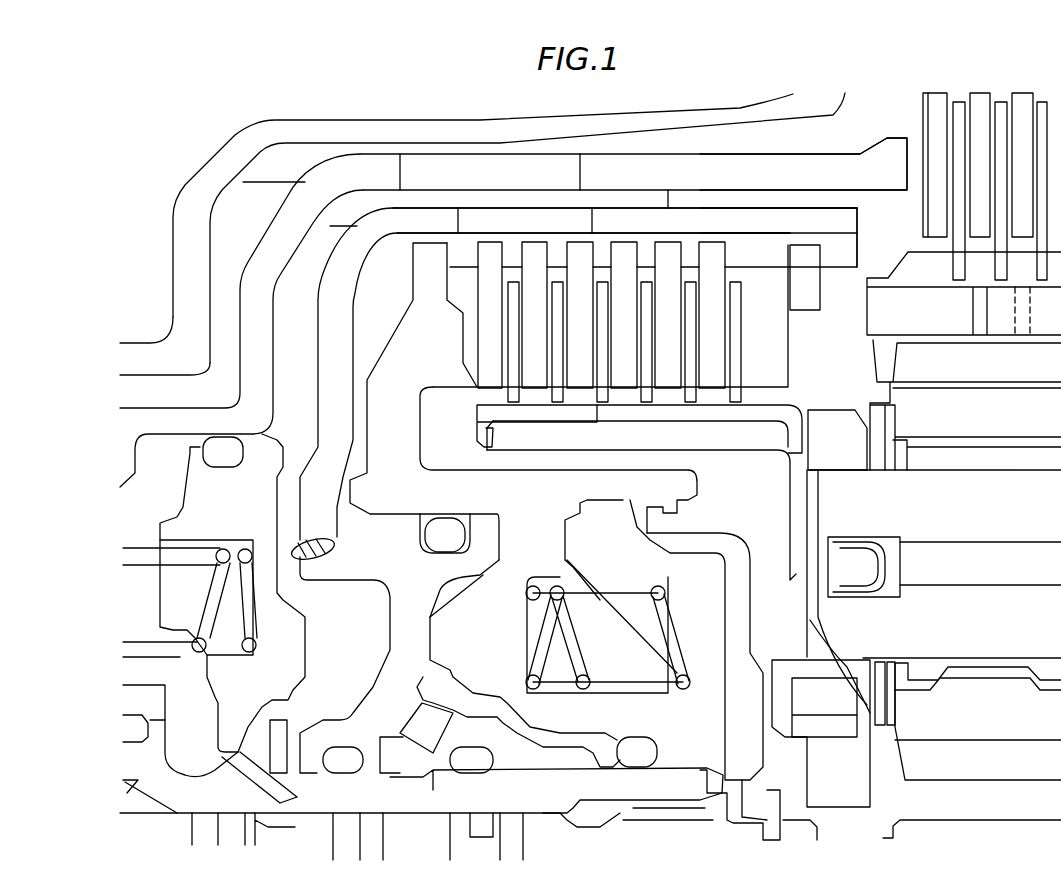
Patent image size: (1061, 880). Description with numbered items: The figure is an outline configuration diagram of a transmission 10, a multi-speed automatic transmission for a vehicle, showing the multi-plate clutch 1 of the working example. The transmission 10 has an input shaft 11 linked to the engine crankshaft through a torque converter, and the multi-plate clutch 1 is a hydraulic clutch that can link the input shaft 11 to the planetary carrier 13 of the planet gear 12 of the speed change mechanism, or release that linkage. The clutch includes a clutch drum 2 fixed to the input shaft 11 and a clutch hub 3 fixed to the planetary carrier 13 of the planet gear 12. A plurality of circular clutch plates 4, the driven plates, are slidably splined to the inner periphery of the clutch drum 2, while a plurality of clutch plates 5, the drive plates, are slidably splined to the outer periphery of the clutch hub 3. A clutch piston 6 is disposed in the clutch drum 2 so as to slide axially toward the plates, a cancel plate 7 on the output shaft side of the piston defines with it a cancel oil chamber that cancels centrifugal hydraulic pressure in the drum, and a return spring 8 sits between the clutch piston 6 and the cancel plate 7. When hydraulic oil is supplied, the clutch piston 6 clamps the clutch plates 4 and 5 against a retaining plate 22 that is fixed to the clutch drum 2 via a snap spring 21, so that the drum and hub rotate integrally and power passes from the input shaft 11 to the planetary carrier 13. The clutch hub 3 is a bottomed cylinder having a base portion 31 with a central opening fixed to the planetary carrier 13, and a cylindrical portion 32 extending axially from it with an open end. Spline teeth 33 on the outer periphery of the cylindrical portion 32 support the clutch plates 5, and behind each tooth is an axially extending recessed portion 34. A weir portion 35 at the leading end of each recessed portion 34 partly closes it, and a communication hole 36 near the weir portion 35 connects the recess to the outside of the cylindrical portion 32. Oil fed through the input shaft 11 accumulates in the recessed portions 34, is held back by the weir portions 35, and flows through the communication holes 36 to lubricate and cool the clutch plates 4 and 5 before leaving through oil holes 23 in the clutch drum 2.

The multi-plate clutch 1 is at (340, 243).
The clutch drum 2 is at (325, 327).
The clutch hub 3 is at (778, 462).
The clutch plates (driven plates) 4 is at (625, 250).
The clutch plates (drive plates) 5 is at (740, 293).
The clutch piston 6 is at (390, 420).
The cancel plate 7 is at (740, 603).
The return spring 8 is at (613, 592).
The transmission 10 is at (157, 206).
The input shaft 11 is at (327, 777).
The planet gear 12 is at (906, 256).
The planetary carrier 13 is at (840, 800).
The snap spring 21 is at (807, 277).
The retaining plate 22 is at (765, 257).
The oil holes 23 is at (470, 202).
The base portion 31 is at (803, 443).
The cylindrical portion 32 is at (755, 407).
The spline teeth 33 is at (477, 393).
The recessed portion 34 is at (690, 431).
The weir portion 35 is at (483, 435).
The communication hole 36 is at (510, 410).